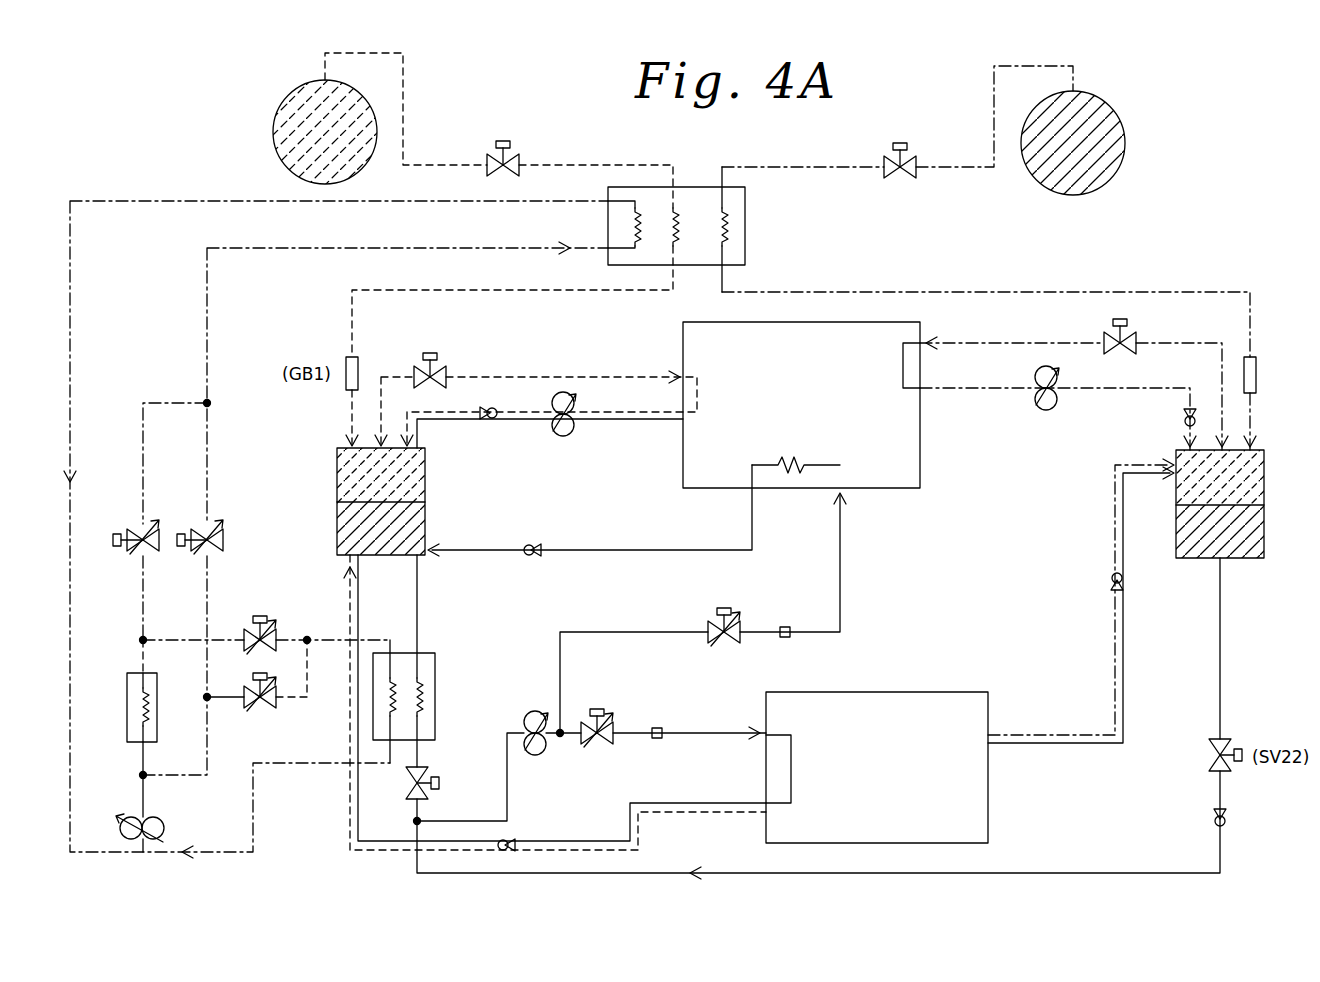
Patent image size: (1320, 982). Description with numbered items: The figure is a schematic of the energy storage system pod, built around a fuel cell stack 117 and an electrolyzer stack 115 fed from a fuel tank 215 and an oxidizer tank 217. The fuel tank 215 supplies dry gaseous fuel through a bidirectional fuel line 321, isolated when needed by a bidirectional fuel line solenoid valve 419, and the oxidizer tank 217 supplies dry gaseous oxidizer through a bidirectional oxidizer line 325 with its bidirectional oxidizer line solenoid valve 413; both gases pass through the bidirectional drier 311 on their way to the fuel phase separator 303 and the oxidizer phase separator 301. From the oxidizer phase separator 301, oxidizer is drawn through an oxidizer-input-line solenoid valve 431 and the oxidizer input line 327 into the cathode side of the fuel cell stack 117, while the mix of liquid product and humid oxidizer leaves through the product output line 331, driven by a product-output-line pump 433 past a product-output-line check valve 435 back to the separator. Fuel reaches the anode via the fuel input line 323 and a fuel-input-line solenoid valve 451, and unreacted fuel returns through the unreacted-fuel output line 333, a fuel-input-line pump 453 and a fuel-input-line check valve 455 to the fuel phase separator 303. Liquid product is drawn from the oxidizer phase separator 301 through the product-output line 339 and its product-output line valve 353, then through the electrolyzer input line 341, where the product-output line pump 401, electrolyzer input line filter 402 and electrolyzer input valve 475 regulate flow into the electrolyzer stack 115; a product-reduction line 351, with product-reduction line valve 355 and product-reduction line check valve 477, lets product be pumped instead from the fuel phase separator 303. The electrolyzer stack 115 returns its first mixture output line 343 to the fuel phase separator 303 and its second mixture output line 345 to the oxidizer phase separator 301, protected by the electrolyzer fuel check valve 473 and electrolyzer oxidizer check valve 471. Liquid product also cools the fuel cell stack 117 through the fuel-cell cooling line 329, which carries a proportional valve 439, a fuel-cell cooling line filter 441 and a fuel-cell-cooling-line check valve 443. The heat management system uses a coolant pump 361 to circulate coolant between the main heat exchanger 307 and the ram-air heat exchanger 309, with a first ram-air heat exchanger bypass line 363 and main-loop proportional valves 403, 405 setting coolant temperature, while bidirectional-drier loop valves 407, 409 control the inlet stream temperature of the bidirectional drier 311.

The electrolyzer stack 115 is at (900, 829).
The fuel cell stack 117 is at (886, 448).
The fuel tank 215 is at (1113, 112).
The oxidizer tank 217 is at (292, 96).
The oxidizer phase separator tank 301 is at (336, 486).
The fuel phase separator tank 303 is at (1240, 560).
The main heat exchanger 307 is at (435, 698).
The ram-air heat exchanger 309 is at (125, 698).
The bidirectional drier 311 is at (745, 237).
The bidirectional fuel line 321 is at (950, 170).
The fuel input line 323 is at (976, 344).
The bidirectional oxidizer line 325 is at (425, 162).
The oxidizer input line 327 is at (600, 373).
The fuel-cell cooling line 329 is at (615, 630).
The product output line 331 is at (637, 420).
The unreacted-fuel output line 333 is at (995, 390).
The product-output line 339 is at (437, 632).
The electrolyzer input line 341 is at (696, 730).
The first mixture output line 343 is at (1050, 735).
The second mixture output line 345 is at (347, 817).
The product-reduction line 351 is at (1222, 710).
The product-output line valve 353 is at (430, 776).
The product-reduction line valve 355 is at (1208, 754).
The coolant pump 361 is at (160, 817).
The first ram-air heat exchanger bypass line 363 is at (307, 676).
The product-output line pump 401 is at (527, 715).
The electrolyzer input line filter 402 is at (657, 740).
The main-loop proportional valve 403 is at (270, 624).
The main-loop proportional valve 405 is at (270, 704).
The bidirectional-drier loop valve 407 is at (141, 518).
The bidirectional-drier loop valve 409 is at (213, 522).
The bidirectional oxidizer line solenoid valve 413 is at (513, 156).
The bidirectional fuel line solenoid valve 419 is at (906, 158).
The oxidizer-input-line solenoid valve 431 is at (440, 362).
The product-output-line pump 433 is at (572, 440).
The product-output-line check valve 435 is at (490, 420).
The proportional valve 439 is at (740, 612).
The fuel-cell cooling line filter 441 is at (783, 627).
The fuel-cell-cooling-line check valve 443 is at (540, 542).
The fuel-input-line solenoid valve 451 is at (1131, 338).
The fuel-input-line pump 453 is at (1035, 372).
The fuel-input-line check valve 455 is at (1184, 418).
The electrolyzer oxidizer check valve 471 is at (507, 855).
The electrolyzer fuel check valve 473 is at (1112, 582).
The electrolyzer input valve 475 is at (610, 712).
The product-reduction line check valve 477 is at (1214, 815).